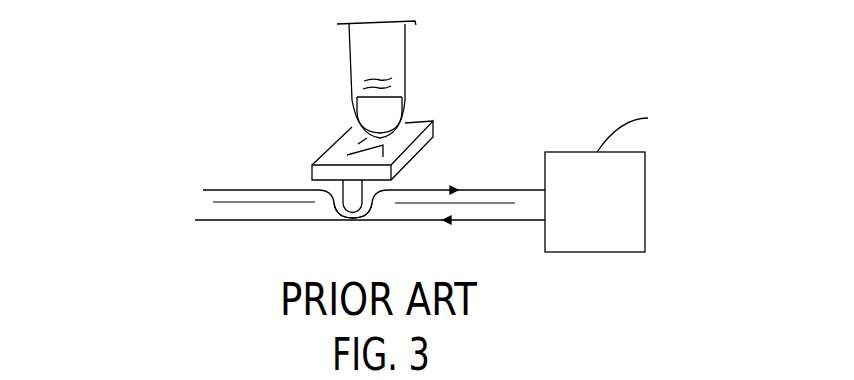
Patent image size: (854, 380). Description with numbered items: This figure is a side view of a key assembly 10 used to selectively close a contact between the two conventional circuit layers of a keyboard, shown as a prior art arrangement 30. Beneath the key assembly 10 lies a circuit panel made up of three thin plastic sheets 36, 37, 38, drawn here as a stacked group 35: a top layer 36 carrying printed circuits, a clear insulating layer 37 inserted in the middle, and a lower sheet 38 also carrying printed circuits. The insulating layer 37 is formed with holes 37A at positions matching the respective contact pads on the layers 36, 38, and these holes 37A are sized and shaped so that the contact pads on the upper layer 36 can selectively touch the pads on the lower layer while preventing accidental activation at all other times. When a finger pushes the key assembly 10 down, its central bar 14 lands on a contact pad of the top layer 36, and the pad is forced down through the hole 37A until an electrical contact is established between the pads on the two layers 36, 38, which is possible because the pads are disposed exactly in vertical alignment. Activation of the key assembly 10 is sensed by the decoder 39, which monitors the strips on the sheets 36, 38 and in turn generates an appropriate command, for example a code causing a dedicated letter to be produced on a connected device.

The prior art key input system 30 is at (213, 52).
The key assembly 10 is at (443, 121).
The central bar 14 is at (335, 192).
The signal path 35 is at (127, 168).
The top layer 36 is at (227, 191).
The insulating layer 37 is at (197, 198).
The hole 37A is at (377, 212).
The lower sheet 38 is at (245, 220).
The decoder 39 is at (637, 210).